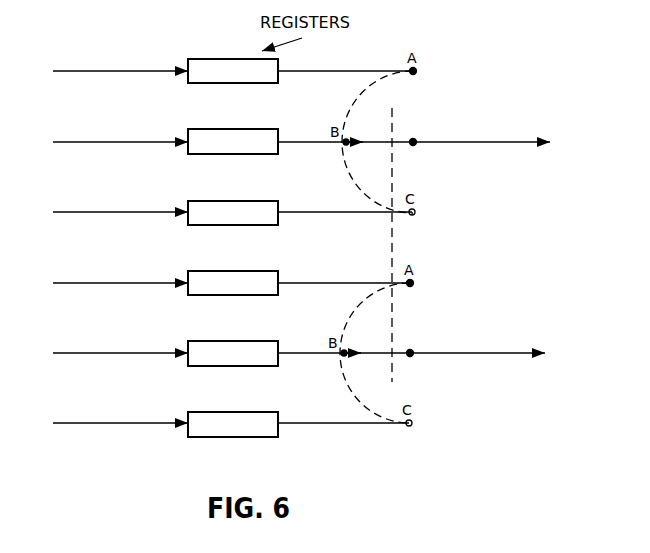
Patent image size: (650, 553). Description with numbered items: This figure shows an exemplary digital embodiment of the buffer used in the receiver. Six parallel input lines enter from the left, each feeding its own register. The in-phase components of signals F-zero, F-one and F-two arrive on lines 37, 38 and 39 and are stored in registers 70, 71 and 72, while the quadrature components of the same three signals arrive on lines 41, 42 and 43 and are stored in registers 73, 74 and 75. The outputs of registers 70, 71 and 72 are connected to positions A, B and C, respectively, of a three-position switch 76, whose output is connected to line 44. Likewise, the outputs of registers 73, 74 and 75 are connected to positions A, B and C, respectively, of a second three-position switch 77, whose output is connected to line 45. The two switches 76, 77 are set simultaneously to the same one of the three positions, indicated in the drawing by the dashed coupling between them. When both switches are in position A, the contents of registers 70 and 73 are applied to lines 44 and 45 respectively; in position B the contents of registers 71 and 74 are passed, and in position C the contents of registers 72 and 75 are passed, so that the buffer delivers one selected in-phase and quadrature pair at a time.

The line 37 is at (99, 71).
The line 38 is at (105, 142).
The line 39 is at (107, 212).
The line 41 is at (108, 283).
The line 42 is at (110, 353).
The line 43 is at (110, 423).
The register 70 is at (205, 59).
The register 71 is at (205, 129).
The register 72 is at (205, 201).
The register 73 is at (205, 271).
The register 74 is at (205, 341).
The register 75 is at (205, 412).
The three-position switch 76 is at (397, 142).
The three-position switch 77 is at (391, 353).
The line 44 is at (484, 142).
The line 45 is at (484, 353).